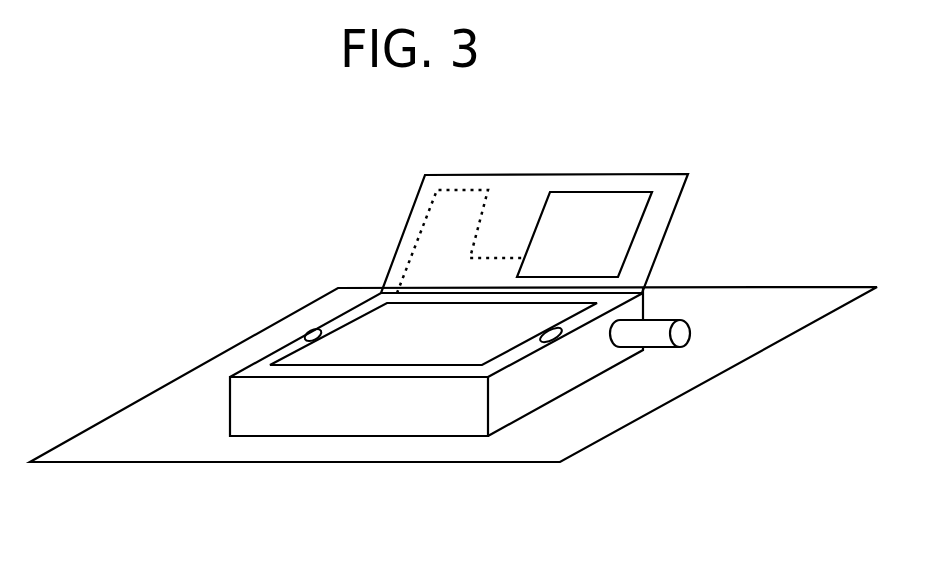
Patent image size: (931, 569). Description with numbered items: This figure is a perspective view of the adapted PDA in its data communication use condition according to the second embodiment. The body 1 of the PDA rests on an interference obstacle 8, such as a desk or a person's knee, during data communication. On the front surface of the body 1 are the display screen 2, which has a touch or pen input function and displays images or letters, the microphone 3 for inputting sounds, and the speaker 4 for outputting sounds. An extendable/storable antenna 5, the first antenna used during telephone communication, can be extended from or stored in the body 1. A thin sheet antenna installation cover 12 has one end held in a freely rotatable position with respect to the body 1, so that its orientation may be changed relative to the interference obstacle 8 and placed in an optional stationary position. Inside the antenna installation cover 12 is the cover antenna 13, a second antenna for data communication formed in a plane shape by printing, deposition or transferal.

The body 1 is at (368, 418).
The display screen 2 is at (362, 315).
The microphone 3 is at (313, 335).
The speaker 4 is at (563, 337).
The extendable/storable antenna 5 is at (668, 320).
The interference obstacle 8 is at (768, 308).
The antenna installation cover 12 is at (681, 194).
The cover antenna 13 is at (420, 197).